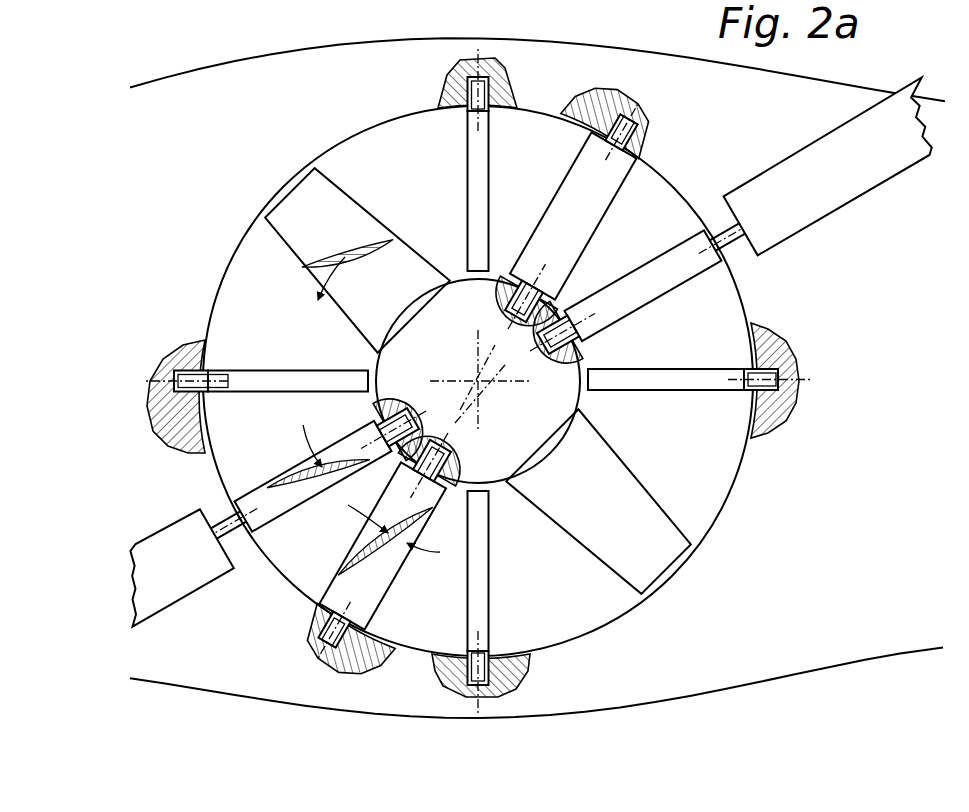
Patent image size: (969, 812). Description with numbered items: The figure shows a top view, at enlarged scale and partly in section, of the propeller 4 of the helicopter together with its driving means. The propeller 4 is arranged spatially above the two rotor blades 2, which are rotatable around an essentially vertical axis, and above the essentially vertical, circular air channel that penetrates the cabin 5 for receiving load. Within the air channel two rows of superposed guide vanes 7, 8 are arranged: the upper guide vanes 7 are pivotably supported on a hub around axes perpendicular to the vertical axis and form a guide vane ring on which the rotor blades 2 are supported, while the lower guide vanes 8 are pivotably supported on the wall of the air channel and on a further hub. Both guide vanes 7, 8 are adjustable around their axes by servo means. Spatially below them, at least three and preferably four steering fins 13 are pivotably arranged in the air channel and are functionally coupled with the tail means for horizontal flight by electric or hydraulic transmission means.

The rotor blades 2 is at (840, 185).
The propeller 4 is at (342, 227).
The cabin 5 is at (370, 695).
The guide vanes 7 is at (662, 278).
The guide vanes 8 is at (583, 215).
The steering fins 13 is at (481, 190).